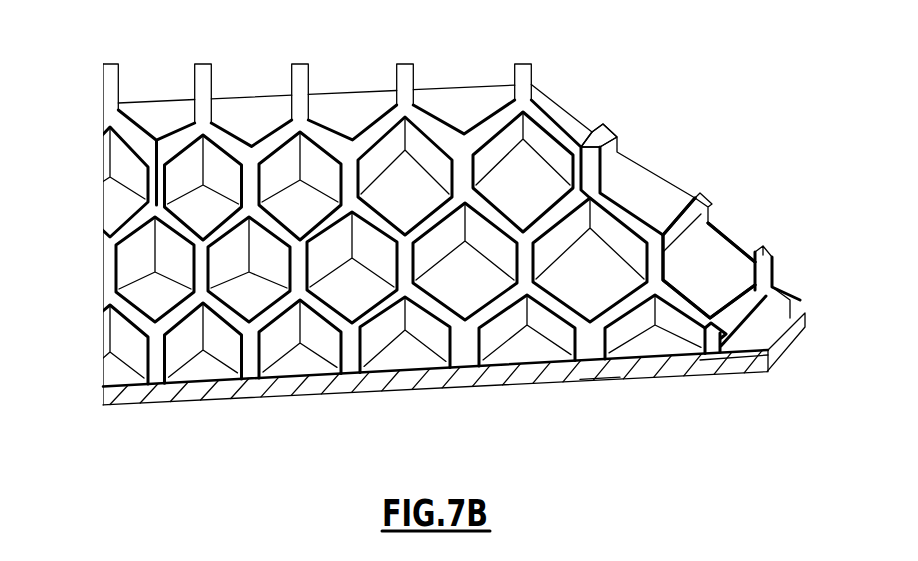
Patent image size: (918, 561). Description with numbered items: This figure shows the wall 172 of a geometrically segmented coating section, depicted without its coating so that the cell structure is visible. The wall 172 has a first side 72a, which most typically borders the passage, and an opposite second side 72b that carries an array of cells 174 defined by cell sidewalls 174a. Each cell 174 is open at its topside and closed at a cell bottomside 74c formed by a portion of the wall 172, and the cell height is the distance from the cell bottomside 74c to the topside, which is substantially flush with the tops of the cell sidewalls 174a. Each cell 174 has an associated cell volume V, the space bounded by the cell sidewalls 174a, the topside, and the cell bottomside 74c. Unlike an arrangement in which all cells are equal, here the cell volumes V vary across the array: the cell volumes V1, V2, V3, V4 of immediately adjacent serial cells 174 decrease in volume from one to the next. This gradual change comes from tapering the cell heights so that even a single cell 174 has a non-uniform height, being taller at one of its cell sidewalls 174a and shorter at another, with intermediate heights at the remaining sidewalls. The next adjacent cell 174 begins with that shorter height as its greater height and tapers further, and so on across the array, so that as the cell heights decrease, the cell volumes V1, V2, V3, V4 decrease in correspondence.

The cells 174 is at (552, 173).
The cell volume V is at (158, 292).
The cell volume of a first serial cell V1 is at (254, 293).
The cell volume of a second serial cell V2 is at (357, 293).
The cell volume of a third serial cell V3 is at (463, 278).
The cell volume of a fourth serial cell V4 is at (621, 273).
The wall 172 is at (184, 403).
The cell sidewalls 174a is at (380, 348).
The cell bottomside 74c is at (514, 352).
The first side 72a is at (598, 380).
The second side 72b is at (655, 348).